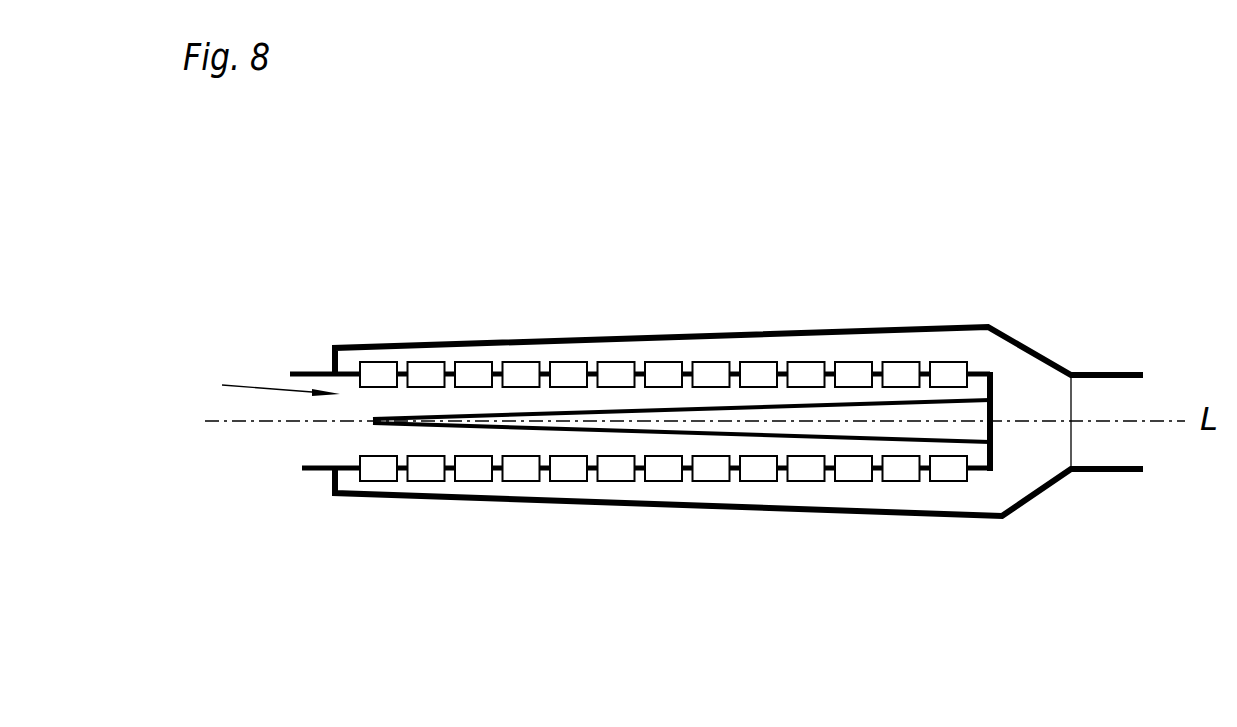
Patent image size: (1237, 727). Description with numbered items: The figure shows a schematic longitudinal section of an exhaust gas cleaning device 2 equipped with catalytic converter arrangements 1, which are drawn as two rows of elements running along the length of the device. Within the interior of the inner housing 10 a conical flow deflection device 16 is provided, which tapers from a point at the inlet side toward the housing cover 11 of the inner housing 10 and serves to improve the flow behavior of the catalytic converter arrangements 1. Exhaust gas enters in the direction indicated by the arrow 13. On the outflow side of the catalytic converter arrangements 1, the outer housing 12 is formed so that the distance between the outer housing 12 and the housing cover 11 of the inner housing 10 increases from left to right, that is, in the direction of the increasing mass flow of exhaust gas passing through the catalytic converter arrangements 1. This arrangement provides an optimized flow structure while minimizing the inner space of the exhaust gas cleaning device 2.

The catalytic converter arrangement 1 is at (381, 377).
The exhaust gas cleaning device 2 is at (372, 523).
The inner housing 10 is at (993, 387).
The housing cover 11 is at (977, 380).
The outer housing 12 is at (632, 337).
The input direction arrow 13 is at (263, 385).
The conical flow deflection device 16 is at (971, 446).